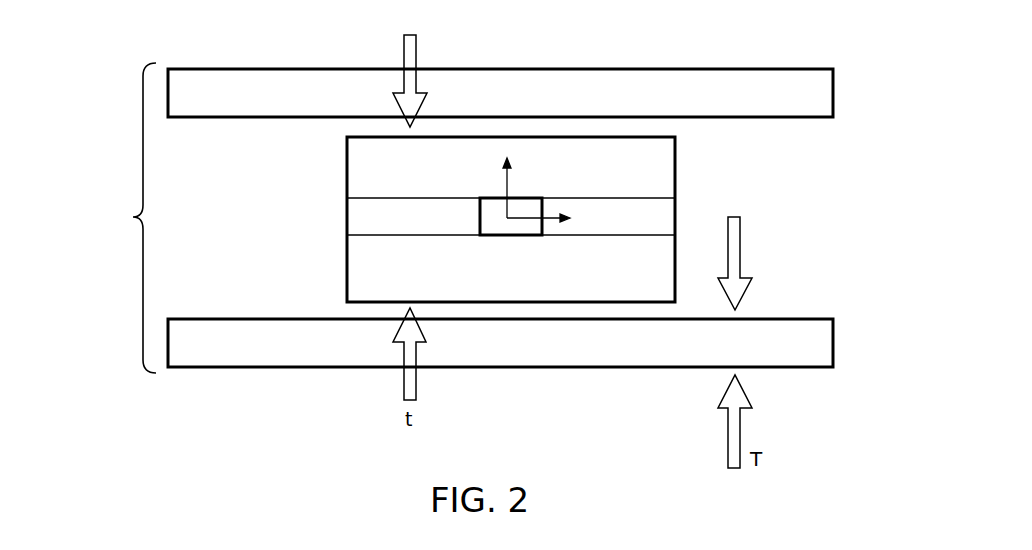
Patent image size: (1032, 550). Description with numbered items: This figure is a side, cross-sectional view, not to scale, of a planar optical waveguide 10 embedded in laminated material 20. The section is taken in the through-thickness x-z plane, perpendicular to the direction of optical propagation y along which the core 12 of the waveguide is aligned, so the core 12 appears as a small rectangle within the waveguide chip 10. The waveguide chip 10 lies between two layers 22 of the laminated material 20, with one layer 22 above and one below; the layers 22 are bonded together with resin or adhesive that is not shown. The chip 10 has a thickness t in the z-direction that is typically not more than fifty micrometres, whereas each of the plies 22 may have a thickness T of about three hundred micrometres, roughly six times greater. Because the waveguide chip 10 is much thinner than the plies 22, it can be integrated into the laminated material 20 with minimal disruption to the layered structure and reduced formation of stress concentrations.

The planar optical waveguide 10 is at (358, 272).
The core 12 is at (507, 236).
The laminated material 20 is at (124, 218).
The layers 22 is at (783, 118).